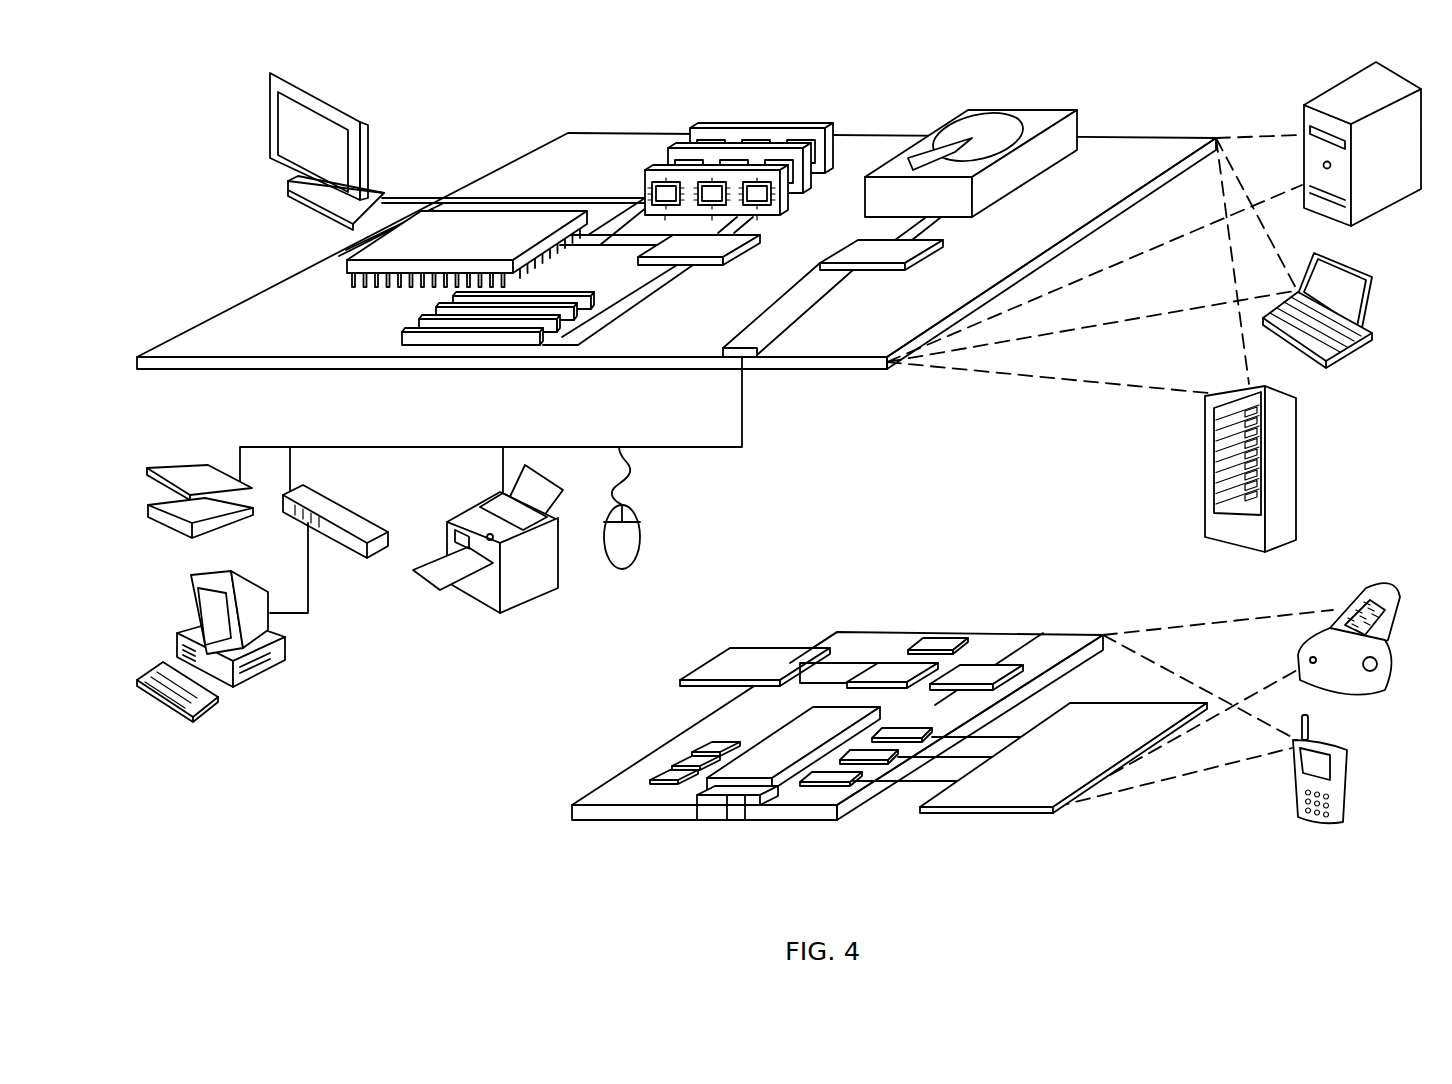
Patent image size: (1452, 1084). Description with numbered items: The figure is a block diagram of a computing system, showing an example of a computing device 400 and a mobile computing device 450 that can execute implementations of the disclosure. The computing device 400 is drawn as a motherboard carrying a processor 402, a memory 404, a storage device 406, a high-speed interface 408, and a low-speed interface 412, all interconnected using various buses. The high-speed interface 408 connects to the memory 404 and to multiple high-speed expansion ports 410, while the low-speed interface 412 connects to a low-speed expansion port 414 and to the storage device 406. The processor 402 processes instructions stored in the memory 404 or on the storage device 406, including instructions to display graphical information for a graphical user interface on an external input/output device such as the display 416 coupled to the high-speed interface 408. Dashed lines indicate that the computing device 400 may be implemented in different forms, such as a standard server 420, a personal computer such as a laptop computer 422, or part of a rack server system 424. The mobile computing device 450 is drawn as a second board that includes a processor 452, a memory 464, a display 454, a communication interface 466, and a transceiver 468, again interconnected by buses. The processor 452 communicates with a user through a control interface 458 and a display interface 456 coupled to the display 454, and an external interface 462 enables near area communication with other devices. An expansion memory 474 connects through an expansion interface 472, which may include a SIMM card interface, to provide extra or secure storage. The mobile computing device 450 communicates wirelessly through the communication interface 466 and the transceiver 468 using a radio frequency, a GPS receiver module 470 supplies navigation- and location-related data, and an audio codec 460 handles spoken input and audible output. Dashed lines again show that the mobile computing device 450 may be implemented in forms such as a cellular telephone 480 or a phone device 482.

The computing device 400 is at (484, 102).
The processor 402 is at (347, 263).
The memory 404 is at (702, 126).
The storage device 406 is at (948, 115).
The high-speed interface 408 is at (656, 241).
The high-speed expansion ports 410 is at (423, 323).
The low-speed interface 412 is at (863, 247).
The low-speed expansion port 414 is at (757, 357).
The display 416 is at (270, 77).
The standard server 420 is at (1304, 122).
The laptop computer 422 is at (1376, 276).
The rack server system 424 is at (1205, 497).
The mobile computing device 450 is at (541, 820).
The processor 452 is at (763, 771).
The display 454 is at (1020, 790).
The display interface 456 is at (838, 784).
The control interface 458 is at (870, 762).
The audio codec 460 is at (903, 740).
The external interface 462 is at (727, 806).
The memory 464 is at (673, 760).
The communication interface 466 is at (895, 672).
The transceiver 468 is at (977, 673).
The GPS receiver module 470 is at (950, 636).
The expansion interface 472 is at (820, 649).
The expansion memory 474 is at (727, 648).
The cellular telephone 480 is at (1357, 587).
The phone device 482 is at (1290, 775).